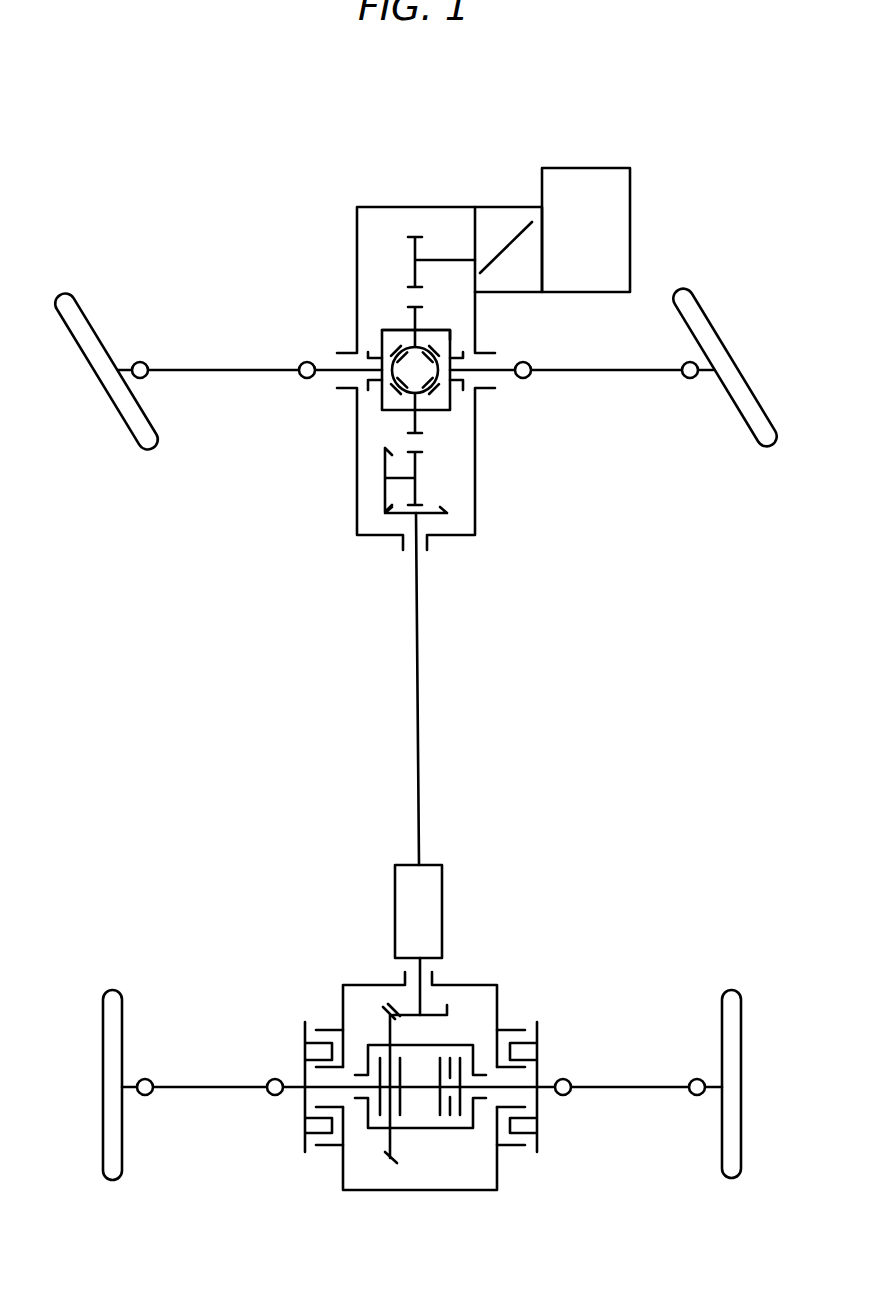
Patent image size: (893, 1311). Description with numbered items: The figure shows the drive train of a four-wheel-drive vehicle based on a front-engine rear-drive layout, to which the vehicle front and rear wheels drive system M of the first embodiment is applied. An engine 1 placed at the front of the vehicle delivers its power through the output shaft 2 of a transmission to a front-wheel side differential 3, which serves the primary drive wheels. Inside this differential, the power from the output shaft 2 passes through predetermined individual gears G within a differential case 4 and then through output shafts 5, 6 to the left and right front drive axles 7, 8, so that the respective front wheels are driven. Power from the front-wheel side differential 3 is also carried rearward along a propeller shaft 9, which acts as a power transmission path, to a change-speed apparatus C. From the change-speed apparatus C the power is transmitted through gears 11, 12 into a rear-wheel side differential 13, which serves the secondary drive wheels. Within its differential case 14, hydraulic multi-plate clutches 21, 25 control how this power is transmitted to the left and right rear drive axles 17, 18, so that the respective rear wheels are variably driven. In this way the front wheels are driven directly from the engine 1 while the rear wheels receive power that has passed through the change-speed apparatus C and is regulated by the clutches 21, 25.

The engine 1 is at (587, 168).
The output shaft of a transmission 2 is at (445, 260).
The front-wheel side differential 3 is at (368, 343).
The differential case 4 is at (452, 337).
The output shaft 5 is at (325, 375).
The output shaft 6 is at (503, 372).
The front drive axle 7 is at (232, 375).
The front drive axle 8 is at (622, 372).
The propeller shaft 9 is at (417, 663).
The gear 11 is at (448, 1011).
The gear 12 is at (383, 1020).
The rear-wheel side differential 13 is at (403, 1203).
The differential case 14 is at (440, 1130).
The rear drive axle 17 is at (213, 1092).
The rear drive axle 18 is at (628, 1092).
The hydraulic multi-plate clutch 21 is at (372, 1141).
The hydraulic multi-plate clutch 25 is at (475, 1015).
The gears G is at (407, 320).
The vehicle front and rear wheels drive system M is at (497, 602).
The change-speed apparatus C is at (442, 875).